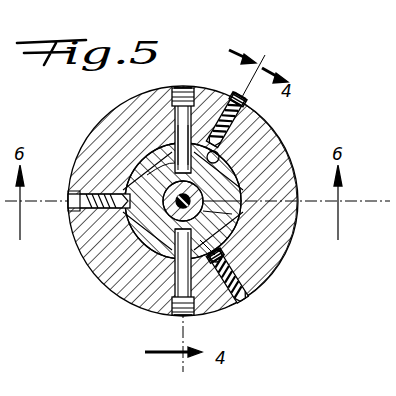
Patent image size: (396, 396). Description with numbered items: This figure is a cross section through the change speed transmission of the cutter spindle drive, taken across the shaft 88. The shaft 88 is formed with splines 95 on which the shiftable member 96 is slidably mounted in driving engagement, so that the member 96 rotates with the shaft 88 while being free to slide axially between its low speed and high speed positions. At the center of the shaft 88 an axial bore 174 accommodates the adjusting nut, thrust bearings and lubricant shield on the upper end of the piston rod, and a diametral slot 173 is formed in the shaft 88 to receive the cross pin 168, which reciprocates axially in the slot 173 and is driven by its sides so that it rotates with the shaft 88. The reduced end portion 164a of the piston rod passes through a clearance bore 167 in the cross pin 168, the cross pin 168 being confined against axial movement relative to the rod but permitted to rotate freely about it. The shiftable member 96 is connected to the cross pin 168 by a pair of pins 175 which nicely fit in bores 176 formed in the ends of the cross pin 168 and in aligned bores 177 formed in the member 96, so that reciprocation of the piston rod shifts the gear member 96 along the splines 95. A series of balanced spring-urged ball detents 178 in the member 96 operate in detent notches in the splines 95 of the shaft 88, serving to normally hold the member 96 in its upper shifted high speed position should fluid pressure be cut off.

The shaft 88 is at (238, 190).
The splines 95 is at (228, 166).
The shiftable member 96 is at (289, 156).
The reduced end portion 164a is at (230, 226).
The clearance bore 167 is at (226, 210).
The cross pin 168 is at (166, 176).
The diametral slot 173 is at (218, 276).
The axial bore 174 is at (132, 244).
The pins 175 is at (177, 117).
The bores 176 is at (177, 138).
The bores 177 is at (193, 100).
The spring-urged ball detents 178 is at (224, 149).